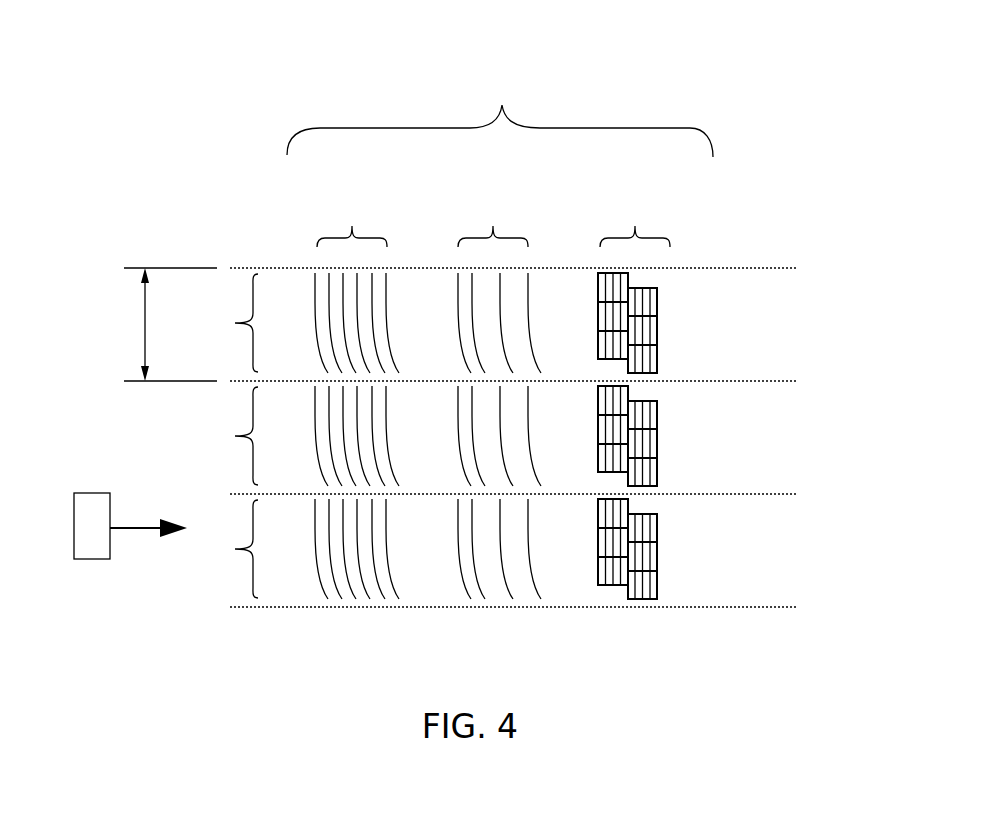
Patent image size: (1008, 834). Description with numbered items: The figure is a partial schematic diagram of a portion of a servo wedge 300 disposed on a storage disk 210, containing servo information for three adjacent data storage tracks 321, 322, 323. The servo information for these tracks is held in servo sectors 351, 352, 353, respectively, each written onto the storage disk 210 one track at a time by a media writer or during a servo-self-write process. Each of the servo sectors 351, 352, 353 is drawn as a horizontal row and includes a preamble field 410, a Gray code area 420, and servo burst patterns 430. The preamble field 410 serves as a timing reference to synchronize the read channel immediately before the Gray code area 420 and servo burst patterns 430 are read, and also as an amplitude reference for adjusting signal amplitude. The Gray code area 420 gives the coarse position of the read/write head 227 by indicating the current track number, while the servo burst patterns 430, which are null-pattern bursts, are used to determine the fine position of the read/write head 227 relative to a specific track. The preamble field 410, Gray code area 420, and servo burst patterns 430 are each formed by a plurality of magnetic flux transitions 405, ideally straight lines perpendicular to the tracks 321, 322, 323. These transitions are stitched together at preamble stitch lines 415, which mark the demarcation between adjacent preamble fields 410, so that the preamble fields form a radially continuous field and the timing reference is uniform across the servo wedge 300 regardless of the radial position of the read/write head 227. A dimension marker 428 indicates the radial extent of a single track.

The servo wedge 300 is at (502, 104).
The storage disk 210 is at (210, 181).
The preamble field 410 is at (352, 226).
The Gray code area 420 is at (493, 226).
The servo burst patterns 430 is at (635, 226).
The magnetic flux transitions 405 is at (387, 296).
The preamble stitch lines 415 is at (708, 268).
The servo sector 351 is at (812, 292).
The servo sector 352 is at (812, 405).
The servo sector 353 is at (812, 513).
The data storage track 321 is at (235, 323).
The data storage track 322 is at (235, 436).
The data storage track 323 is at (235, 549).
The channel height 428 is at (145, 315).
The read/write head 227 is at (110, 542).